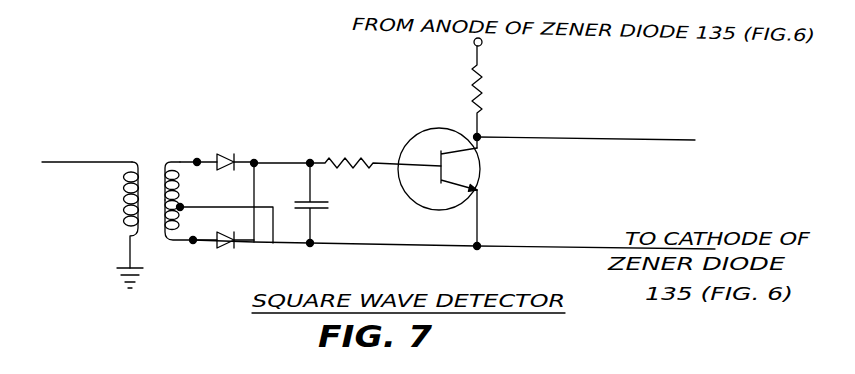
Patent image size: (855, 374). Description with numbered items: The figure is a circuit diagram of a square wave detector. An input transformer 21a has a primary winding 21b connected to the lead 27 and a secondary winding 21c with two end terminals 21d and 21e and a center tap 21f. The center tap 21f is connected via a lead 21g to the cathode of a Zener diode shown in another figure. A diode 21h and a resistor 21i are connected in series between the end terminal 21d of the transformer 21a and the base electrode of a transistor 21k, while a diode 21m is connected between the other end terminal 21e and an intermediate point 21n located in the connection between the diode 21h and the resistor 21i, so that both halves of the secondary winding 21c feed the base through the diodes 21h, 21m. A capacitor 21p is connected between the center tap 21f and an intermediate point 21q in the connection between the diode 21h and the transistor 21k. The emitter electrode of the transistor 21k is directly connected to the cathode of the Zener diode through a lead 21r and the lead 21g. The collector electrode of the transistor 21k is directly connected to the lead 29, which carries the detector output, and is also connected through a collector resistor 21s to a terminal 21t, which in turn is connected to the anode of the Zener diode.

The lead 27 is at (105, 161).
The input transformer 21a is at (175, 157).
The primary winding 21b is at (123, 209).
The secondary winding 21c is at (178, 186).
The end terminal 21d is at (198, 159).
The end terminal 21e is at (196, 244).
The center tap 21f is at (181, 209).
The lead 21g is at (368, 244).
The diode 21h is at (228, 154).
The resistor 21i is at (354, 163).
The transistor 21k is at (437, 205).
The diode 21m is at (224, 247).
The intermediate point 21n is at (256, 161).
The capacitor 21p is at (327, 206).
The conductor 21q is at (309, 167).
The lead 21r is at (479, 212).
The collector resistor 21s is at (479, 93).
The terminal 21t is at (482, 45).
The lead 29 is at (675, 139).